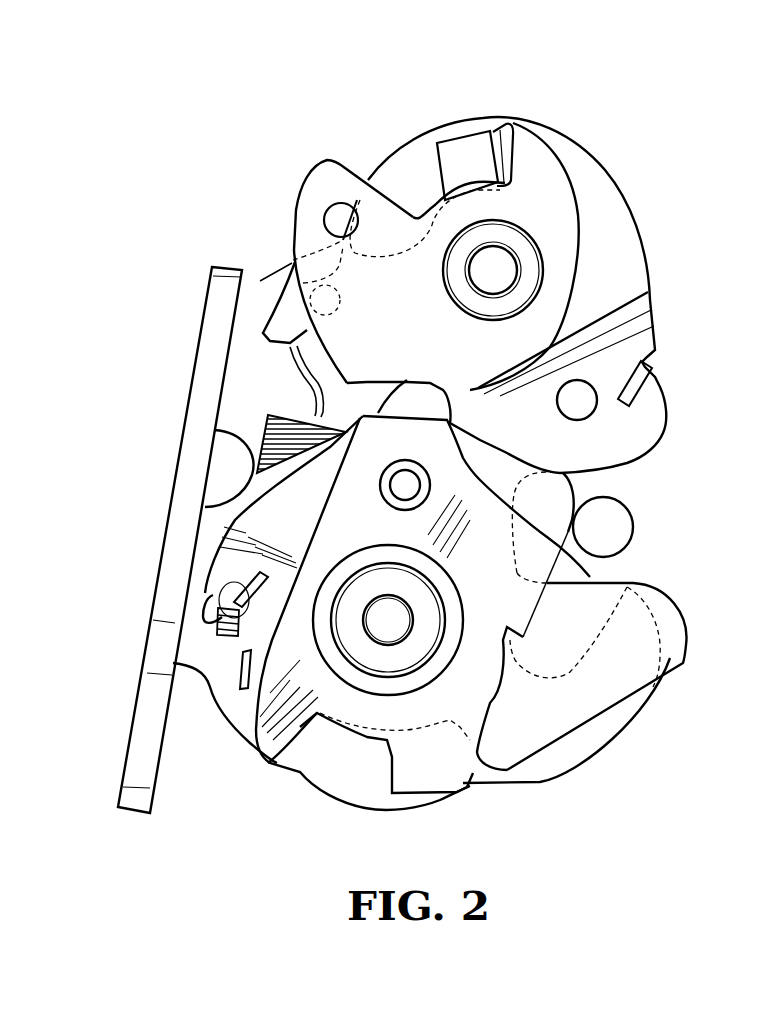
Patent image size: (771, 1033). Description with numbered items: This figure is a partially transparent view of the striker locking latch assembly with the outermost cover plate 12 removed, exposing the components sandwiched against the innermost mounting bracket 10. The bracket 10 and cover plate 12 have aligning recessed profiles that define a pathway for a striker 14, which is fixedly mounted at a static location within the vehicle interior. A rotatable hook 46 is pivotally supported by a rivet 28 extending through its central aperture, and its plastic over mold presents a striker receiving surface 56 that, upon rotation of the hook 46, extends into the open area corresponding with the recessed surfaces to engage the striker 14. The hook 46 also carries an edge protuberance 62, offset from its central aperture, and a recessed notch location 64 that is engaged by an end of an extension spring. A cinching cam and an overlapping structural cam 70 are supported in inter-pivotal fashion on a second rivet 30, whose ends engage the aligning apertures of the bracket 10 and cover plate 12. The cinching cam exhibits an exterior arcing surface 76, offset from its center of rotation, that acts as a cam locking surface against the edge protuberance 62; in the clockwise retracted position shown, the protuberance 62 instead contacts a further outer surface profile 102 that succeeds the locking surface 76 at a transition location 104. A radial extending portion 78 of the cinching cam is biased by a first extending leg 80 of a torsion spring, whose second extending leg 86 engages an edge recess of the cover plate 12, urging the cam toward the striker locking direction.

The mounting bracket 10 is at (257, 282).
The cover plate 12 is at (675, 640).
The striker 14 is at (613, 512).
The rivet 28 is at (390, 603).
The rivet 30 is at (508, 270).
The hook 46 is at (560, 757).
The striker receiving surface 56 is at (590, 577).
The edge protuberance 62 is at (403, 392).
The recessed notch location 64 is at (215, 597).
The structural cam 70 is at (297, 283).
The exterior arcing surface 76 is at (265, 333).
The radial extending portion 78 is at (493, 128).
The first extending leg 80 is at (505, 118).
The second extending leg 86 is at (632, 393).
The outer surface profile 102 is at (367, 380).
The transition location 104 is at (320, 360).